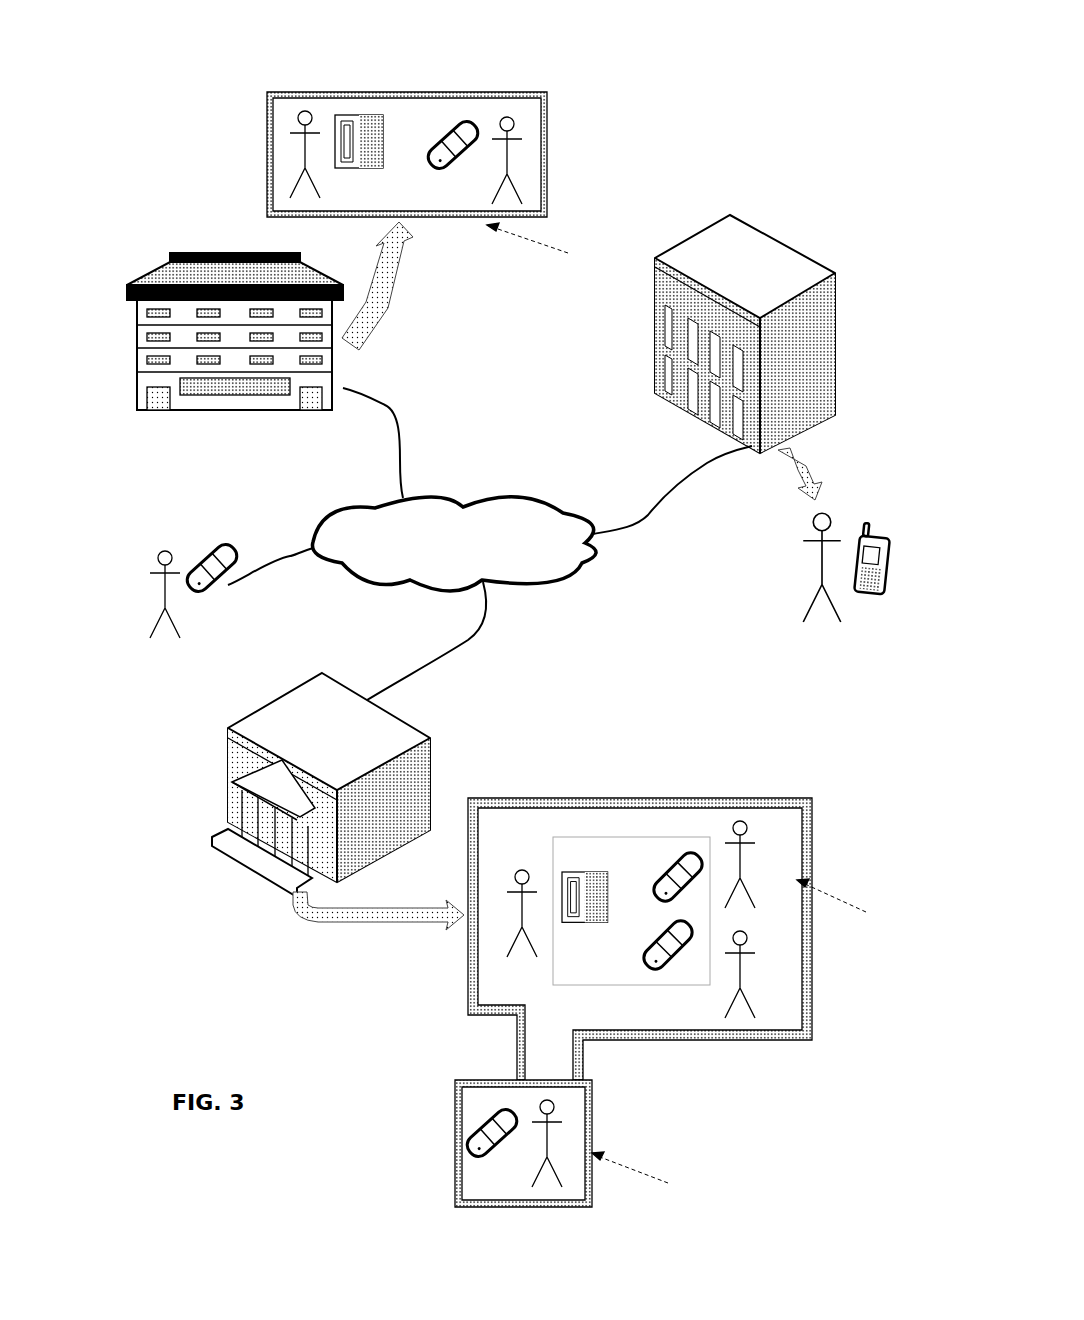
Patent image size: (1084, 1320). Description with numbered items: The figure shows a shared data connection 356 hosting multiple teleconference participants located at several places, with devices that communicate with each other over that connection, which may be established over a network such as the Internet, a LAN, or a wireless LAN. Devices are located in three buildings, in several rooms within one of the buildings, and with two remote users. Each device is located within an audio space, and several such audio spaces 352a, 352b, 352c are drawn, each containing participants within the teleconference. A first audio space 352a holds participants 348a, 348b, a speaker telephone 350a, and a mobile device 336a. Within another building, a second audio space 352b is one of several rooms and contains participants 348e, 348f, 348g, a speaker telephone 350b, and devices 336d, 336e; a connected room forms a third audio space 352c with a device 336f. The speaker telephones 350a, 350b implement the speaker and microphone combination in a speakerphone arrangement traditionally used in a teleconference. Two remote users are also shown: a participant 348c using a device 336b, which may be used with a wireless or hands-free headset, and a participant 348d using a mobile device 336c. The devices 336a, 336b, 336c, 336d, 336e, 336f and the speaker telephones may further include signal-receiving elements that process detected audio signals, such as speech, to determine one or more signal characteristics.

The device 336a is at (452, 128).
The device 336b is at (872, 537).
The device 336c is at (210, 590).
The device 336d is at (670, 865).
The device 336e is at (670, 968).
The device 336f is at (477, 1133).
The participant 348a is at (290, 133).
The participant 348b is at (537, 137).
The participant 348c is at (817, 582).
The participant 348d is at (183, 576).
The participant 348e is at (535, 955).
The participant 348f is at (725, 845).
The participant 348g is at (755, 955).
The speaker telephone 350a is at (390, 92).
The speaker telephone 350b is at (585, 888).
The audio space 352a is at (554, 246).
The audio space 352b is at (859, 904).
The audio space 352c is at (591, 1143).
The shared data connection 356 is at (500, 498).